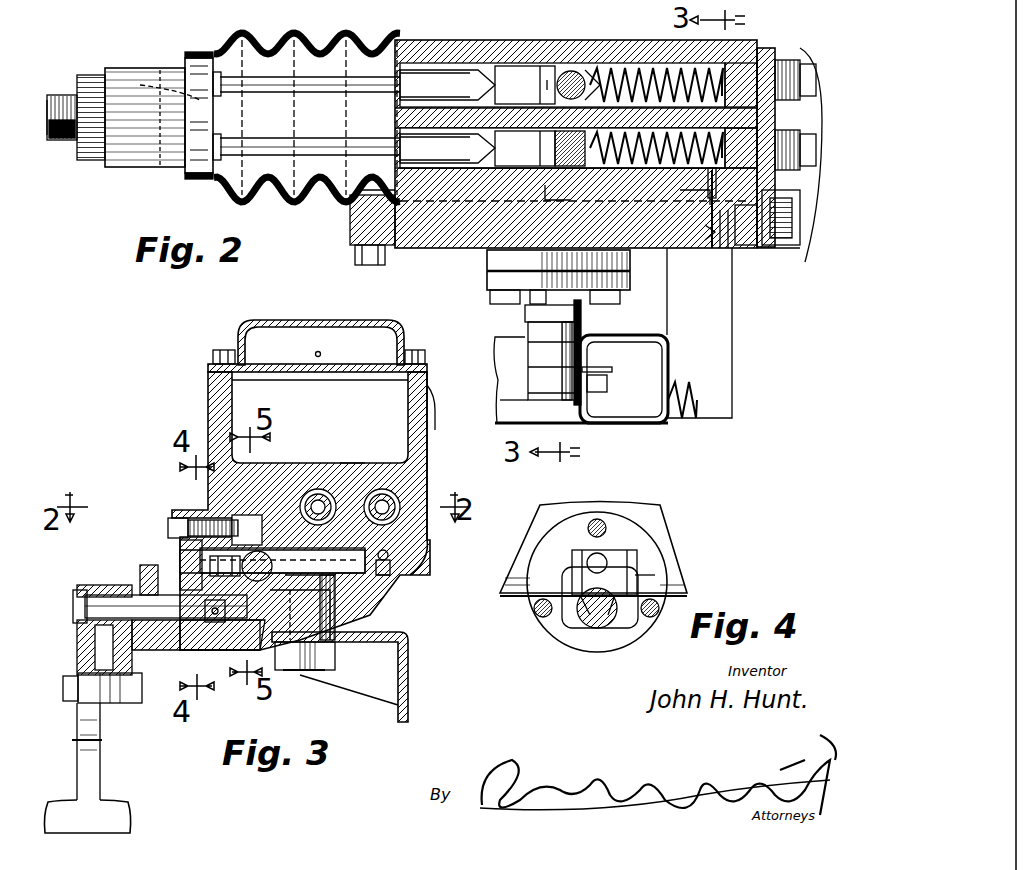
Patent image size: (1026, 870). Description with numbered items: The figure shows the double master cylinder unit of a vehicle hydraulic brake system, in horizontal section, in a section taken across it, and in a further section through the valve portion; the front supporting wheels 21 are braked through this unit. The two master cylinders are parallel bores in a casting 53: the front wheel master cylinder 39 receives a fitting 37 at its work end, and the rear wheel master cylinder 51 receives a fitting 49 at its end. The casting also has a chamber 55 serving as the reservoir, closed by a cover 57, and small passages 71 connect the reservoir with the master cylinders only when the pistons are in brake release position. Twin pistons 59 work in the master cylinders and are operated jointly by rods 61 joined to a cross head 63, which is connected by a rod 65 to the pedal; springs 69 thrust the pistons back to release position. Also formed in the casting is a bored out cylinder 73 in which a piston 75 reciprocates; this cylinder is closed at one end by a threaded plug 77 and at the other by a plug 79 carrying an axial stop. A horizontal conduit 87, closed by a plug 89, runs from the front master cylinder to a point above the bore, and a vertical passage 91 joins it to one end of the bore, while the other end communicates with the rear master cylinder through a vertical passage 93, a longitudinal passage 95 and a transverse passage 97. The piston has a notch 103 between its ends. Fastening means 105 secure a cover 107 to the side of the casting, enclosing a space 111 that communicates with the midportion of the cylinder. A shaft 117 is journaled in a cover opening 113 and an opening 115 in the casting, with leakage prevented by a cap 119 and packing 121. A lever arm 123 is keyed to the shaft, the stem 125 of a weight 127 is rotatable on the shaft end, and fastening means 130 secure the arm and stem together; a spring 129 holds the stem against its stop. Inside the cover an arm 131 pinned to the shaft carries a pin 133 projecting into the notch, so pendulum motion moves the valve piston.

In FIG. 2, the front supporting wheels 21 is at (70, 0).
In FIG. 2, the fitting 37 is at (790, 225).
In FIG. 2, the front wheel master cylinder 39 is at (660, 168).
In FIG. 3, the front wheel master cylinder 39 is at (312, 490).
In FIG. 2, the fitting 49 is at (790, 58).
In FIG. 2, the rear wheel master cylinder 51 is at (612, 68).
In FIG. 3, the rear wheel master cylinder 51 is at (380, 488).
In FIG. 3, the casting 53 is at (425, 490).
In FIG. 4, the casting 53 is at (525, 552).
In FIG. 2, the chamber 55 is at (570, 72).
In FIG. 3, the chamber 55 is at (248, 404).
In FIG. 3, the cover 57 is at (300, 320).
In FIG. 2, the twin pistons 59 is at (492, 135).
In FIG. 2, the rods 61 is at (300, 145).
In FIG. 2, the cross head 63 is at (148, 158).
In FIG. 2, the rod 65 is at (77, 130).
In FIG. 2, the springs 69 is at (630, 140).
In FIG. 3, the small passages 71 is at (362, 460).
In FIG. 2, the bored out cylinder 73 is at (490, 246).
In FIG. 3, the bored out cylinder 73 is at (320, 576).
In FIG. 3, the piston 75 is at (262, 555).
In FIG. 4, the piston 75 is at (580, 560).
In FIG. 2, the threaded plug 77 is at (745, 245).
In FIG. 2, the plug 79 is at (360, 208).
In FIG. 2, the horizontal conduit 87 is at (735, 240).
In FIG. 2, the plug 89 is at (712, 250).
In FIG. 2, the vertical passage 91 is at (712, 220).
In FIG. 2, the vertical passage 93 is at (735, 70).
In FIG. 3, the vertical passage 93 is at (395, 548).
In FIG. 2, the longitudinal passage 95 is at (532, 64).
In FIG. 3, the longitudinal passage 95 is at (395, 565).
In FIG. 2, the transverse passage 97 is at (375, 240).
In FIG. 3, the transverse passage 97 is at (385, 580).
In FIG. 3, the notch 103 is at (320, 630).
In FIG. 4, the notch 103 is at (600, 560).
In FIG. 2, the fastening means 105 is at (610, 296).
In FIG. 3, the fastening means 105 is at (180, 512).
In FIG. 4, the fastening means 105 is at (655, 580).
In FIG. 2, the cover 107 is at (582, 282).
In FIG. 3, the cover 107 is at (185, 545).
In FIG. 4, the cover 107 is at (615, 608).
In FIG. 3, the space 111 is at (200, 573).
In FIG. 3, the cover opening 113 is at (180, 630).
In FIG. 3, the opening 115 is at (260, 645).
In FIG. 2, the shaft 117 is at (575, 400).
In FIG. 3, the shaft 117 is at (108, 598).
In FIG. 4, the shaft 117 is at (580, 612).
In FIG. 2, the cap 119 is at (590, 340).
In FIG. 3, the cap 119 is at (135, 580).
In FIG. 3, the packing 121 is at (85, 640).
In FIG. 2, the lever arm 123 is at (540, 348).
In FIG. 3, the lever arm 123 is at (120, 710).
In FIG. 2, the stem 125 is at (535, 382).
In FIG. 3, the stem 125 is at (80, 590).
In FIG. 2, the weight 127 is at (650, 420).
In FIG. 3, the weight 127 is at (112, 826).
In FIG. 2, the spring 129 is at (700, 408).
In FIG. 3, the spring 129 is at (75, 740).
In FIG. 2, the fastening means 130 is at (805, 270).
In FIG. 3, the fastening means 130 is at (90, 700).
In FIG. 2, the arm 131 is at (735, 370).
In FIG. 3, the arm 131 is at (205, 650).
In FIG. 4, the arm 131 is at (578, 585).
In FIG. 3, the pin 133 is at (320, 590).
In FIG. 4, the pin 133 is at (615, 560).